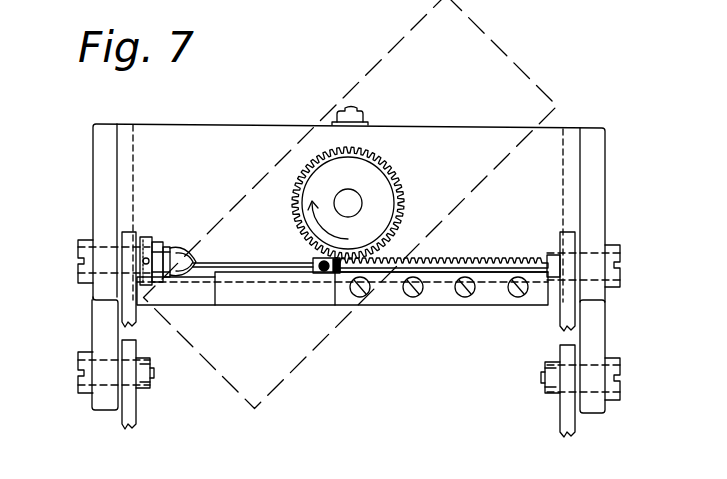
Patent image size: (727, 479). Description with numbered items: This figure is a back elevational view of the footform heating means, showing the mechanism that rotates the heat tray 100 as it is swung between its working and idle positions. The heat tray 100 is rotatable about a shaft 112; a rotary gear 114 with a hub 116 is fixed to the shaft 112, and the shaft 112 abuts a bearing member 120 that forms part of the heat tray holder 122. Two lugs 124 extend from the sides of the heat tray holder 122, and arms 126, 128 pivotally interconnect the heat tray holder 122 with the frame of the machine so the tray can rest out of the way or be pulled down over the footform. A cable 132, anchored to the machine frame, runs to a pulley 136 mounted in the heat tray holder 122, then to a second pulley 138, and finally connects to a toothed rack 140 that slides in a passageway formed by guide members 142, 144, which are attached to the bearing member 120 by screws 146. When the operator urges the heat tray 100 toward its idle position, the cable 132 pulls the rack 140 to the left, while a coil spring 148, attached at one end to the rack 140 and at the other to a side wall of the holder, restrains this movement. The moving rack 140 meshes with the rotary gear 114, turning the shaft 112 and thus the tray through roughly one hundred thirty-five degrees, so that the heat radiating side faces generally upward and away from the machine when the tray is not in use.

The heat tray 100 is at (506, 60).
The shaft 112 is at (362, 196).
The rotary gear 114 is at (373, 157).
The hub 116 is at (407, 201).
The bearing member 120 is at (231, 127).
The heat tray holder 122 is at (557, 133).
The lugs 124 is at (97, 327).
The arm 126 is at (136, 421).
The arm 128 is at (137, 313).
The cable 132 is at (144, 237).
The pulley 136 is at (157, 243).
The second pulley 138 is at (180, 249).
The toothed rack 140 is at (488, 259).
The guide member 142 is at (400, 262).
The guide member 144 is at (245, 300).
The screws 146 is at (418, 299).
The coil spring 148 is at (330, 274).